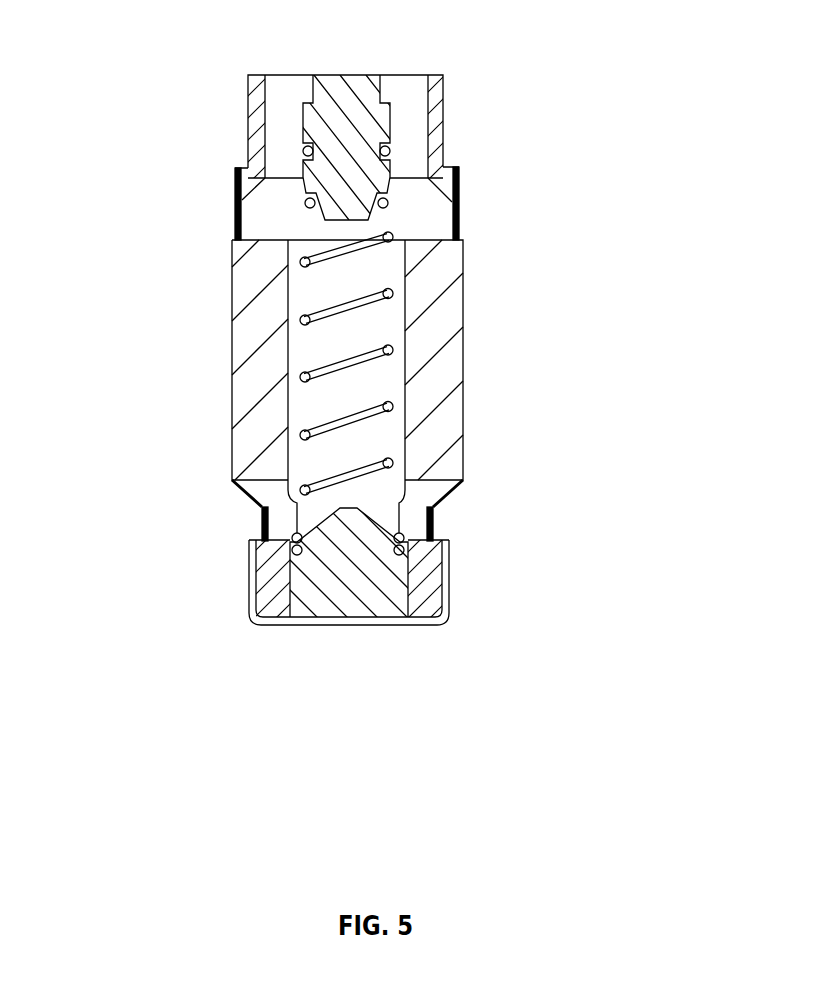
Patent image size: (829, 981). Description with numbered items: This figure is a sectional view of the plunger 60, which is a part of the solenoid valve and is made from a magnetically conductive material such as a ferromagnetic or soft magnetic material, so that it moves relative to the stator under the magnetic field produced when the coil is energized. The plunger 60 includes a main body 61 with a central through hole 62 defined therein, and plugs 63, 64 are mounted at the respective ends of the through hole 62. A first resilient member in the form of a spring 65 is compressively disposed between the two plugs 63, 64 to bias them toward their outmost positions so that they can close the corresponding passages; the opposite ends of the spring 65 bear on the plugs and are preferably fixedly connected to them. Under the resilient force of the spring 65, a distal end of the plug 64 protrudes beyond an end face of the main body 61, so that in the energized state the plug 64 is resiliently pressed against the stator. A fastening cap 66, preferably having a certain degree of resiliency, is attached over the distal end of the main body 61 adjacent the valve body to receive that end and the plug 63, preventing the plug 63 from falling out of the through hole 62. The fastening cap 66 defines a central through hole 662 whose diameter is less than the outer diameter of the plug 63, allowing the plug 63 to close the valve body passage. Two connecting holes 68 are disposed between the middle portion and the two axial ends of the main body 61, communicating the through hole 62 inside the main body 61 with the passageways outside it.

The plunger 60 is at (206, 88).
The main body 61 is at (433, 317).
The central through hole 62 is at (314, 345).
The plug 63 is at (357, 583).
The plug 64 is at (353, 130).
The spring 65 is at (370, 357).
The fastening cap 66 is at (476, 620).
The central through hole 662 is at (345, 630).
The connecting hole 68 is at (263, 220).